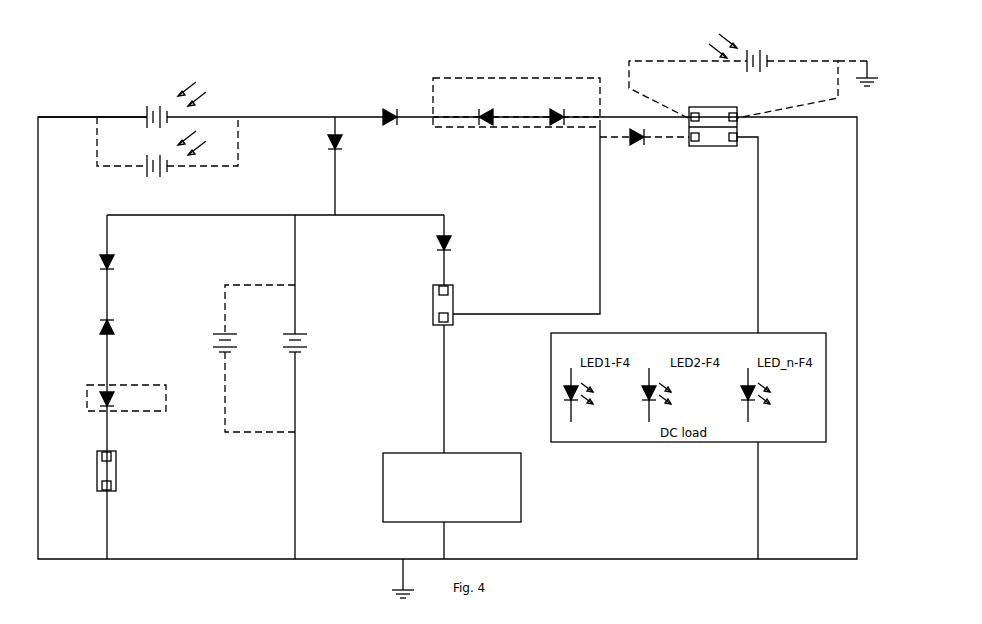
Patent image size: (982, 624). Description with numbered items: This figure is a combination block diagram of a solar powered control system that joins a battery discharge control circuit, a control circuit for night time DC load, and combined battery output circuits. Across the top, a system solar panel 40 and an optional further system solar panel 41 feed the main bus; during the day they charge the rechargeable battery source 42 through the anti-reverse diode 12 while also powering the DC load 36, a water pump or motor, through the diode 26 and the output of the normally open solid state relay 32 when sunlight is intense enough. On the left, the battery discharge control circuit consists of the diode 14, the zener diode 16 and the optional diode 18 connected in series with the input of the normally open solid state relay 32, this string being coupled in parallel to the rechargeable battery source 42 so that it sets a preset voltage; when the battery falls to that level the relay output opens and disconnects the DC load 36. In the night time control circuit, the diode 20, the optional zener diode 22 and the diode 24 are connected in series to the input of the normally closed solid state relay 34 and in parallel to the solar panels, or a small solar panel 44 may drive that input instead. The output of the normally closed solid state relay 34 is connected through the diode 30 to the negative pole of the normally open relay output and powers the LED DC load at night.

The system solar panel 40 is at (122, 105).
The system solar panel 41 is at (148, 160).
The diode 12 is at (309, 166).
The diode 14 is at (131, 263).
The zener diode 16 is at (110, 320).
The diode 18 is at (126, 398).
The diode 20 is at (392, 107).
The zener diode 22 is at (516, 102).
The diode 24 is at (568, 107).
The diode 26 is at (472, 244).
The diode 30 is at (644, 147).
The normally open solid state relay 32 is at (348, 309).
The normally closed solid state relay 34 is at (711, 319).
The DC load 36 is at (432, 487).
The rechargeable battery source 42 is at (276, 358).
The small solar panel 44 is at (753, 75).